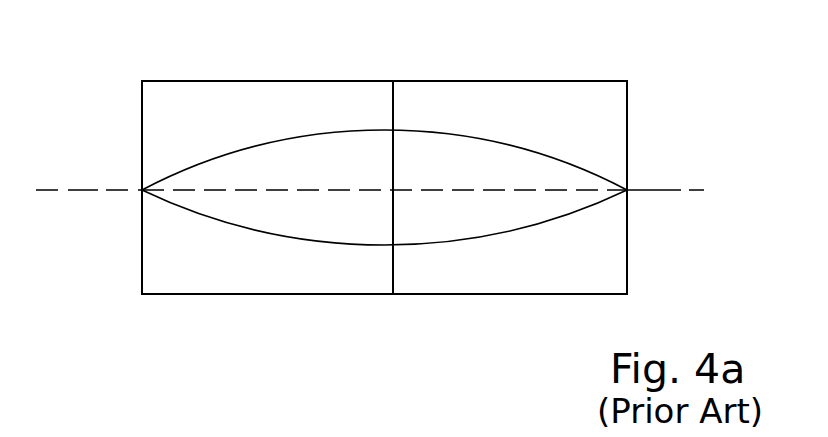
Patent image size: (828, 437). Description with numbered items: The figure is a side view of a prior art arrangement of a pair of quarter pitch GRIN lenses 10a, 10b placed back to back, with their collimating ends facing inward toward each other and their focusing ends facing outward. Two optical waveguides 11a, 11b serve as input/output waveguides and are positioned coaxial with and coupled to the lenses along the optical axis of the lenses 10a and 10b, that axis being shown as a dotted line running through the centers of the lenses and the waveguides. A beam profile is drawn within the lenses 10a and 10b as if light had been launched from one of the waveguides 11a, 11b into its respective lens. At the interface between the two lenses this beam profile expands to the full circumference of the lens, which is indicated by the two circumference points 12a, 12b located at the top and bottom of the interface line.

The quarter pitch GRIN lens 10a is at (240, 98).
The quarter pitch GRIN lens 10b is at (585, 93).
The optical waveguide 11a is at (140, 189).
The optical waveguide 11b is at (665, 184).
The circumference point 12a is at (396, 128).
The circumference point 12b is at (393, 245).